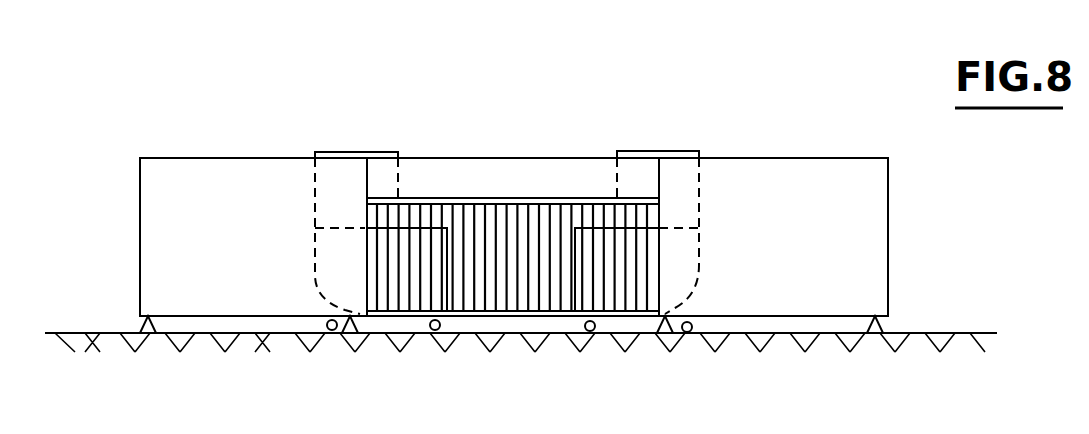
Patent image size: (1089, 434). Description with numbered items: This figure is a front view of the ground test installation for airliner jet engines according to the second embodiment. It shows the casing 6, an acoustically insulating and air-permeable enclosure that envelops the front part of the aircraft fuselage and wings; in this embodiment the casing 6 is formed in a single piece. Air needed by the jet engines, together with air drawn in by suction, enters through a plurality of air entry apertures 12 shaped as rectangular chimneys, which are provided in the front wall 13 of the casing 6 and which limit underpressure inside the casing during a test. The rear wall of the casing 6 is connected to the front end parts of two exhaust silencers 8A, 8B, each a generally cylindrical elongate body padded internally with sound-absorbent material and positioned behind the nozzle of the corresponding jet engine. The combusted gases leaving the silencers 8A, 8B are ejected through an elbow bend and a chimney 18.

The casing 6 is at (260, 153).
The exhaust silencer 8A is at (308, 236).
The exhaust silencer 8B is at (700, 262).
The air entry apertures 12 is at (560, 302).
The front wall 13 is at (488, 315).
The chimney 18 is at (680, 150).